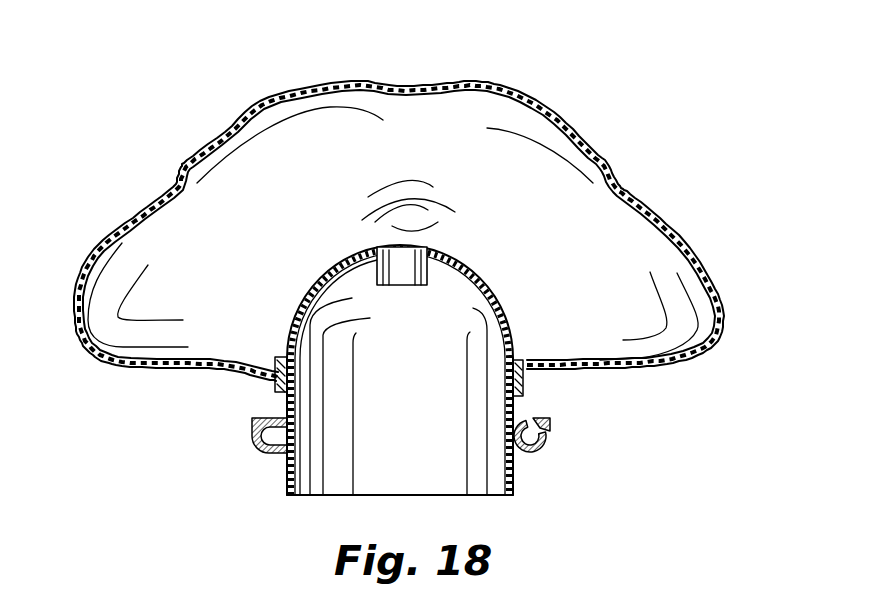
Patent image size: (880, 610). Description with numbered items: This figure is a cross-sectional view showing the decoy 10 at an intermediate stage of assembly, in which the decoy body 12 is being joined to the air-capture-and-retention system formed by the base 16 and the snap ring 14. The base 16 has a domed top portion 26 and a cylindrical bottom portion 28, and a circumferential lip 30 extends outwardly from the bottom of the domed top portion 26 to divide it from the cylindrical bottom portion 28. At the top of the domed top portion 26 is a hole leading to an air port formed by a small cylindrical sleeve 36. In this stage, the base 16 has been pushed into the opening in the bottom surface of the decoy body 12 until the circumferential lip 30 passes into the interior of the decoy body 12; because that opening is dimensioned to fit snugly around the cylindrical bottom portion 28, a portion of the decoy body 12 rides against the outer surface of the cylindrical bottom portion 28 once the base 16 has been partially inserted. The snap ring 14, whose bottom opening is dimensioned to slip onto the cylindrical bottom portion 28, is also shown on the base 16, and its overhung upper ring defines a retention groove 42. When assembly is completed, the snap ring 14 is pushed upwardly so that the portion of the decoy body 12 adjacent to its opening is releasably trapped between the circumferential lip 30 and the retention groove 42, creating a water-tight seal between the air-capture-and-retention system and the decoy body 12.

The decoy 10 is at (668, 138).
The decoy body 12 is at (223, 118).
The snap ring 14 is at (556, 438).
The base 16 is at (529, 506).
The domed top portion 26 is at (478, 278).
The cylindrical bottom portion 28 is at (287, 473).
The circumferential lip 30 is at (520, 357).
The small cylindrical sleeve 36 is at (376, 266).
The retention groove 42 is at (520, 423).